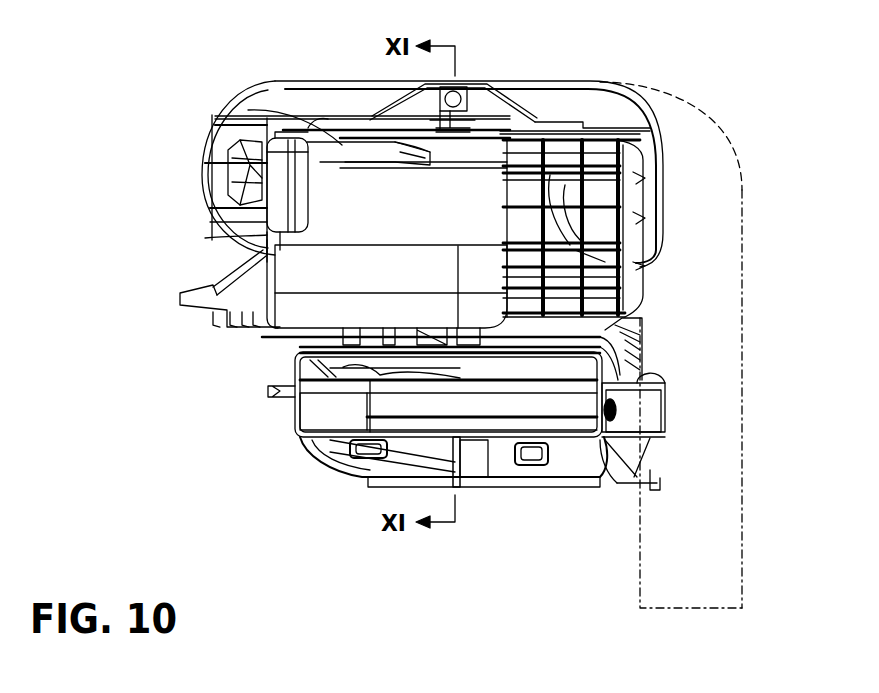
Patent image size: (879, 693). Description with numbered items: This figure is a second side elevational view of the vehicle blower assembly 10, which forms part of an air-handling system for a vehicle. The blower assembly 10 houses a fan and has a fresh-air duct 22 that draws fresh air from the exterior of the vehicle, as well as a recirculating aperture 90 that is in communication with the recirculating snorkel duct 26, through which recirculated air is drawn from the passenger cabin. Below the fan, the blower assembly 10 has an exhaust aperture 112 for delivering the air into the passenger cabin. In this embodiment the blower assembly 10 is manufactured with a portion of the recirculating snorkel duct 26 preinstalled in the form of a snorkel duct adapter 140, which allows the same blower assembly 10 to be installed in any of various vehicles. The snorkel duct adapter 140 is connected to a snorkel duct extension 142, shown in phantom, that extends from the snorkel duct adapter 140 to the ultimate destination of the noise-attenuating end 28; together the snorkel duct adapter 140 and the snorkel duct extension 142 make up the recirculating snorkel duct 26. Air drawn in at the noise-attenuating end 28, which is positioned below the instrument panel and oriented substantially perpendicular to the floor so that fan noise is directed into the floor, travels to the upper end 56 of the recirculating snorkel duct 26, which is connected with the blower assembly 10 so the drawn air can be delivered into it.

The blower assembly 10 is at (259, 70).
The fresh-air duct 22 is at (552, 82).
The recirculating snorkel duct 26 is at (742, 315).
The noise-attenuating end 28 is at (710, 610).
The upper end 56 is at (228, 112).
The recirculating aperture 90 is at (563, 187).
The exhaust aperture 112 is at (522, 480).
The snorkel duct adapter 140 is at (345, 221).
The snorkel duct extension 142 is at (710, 413).